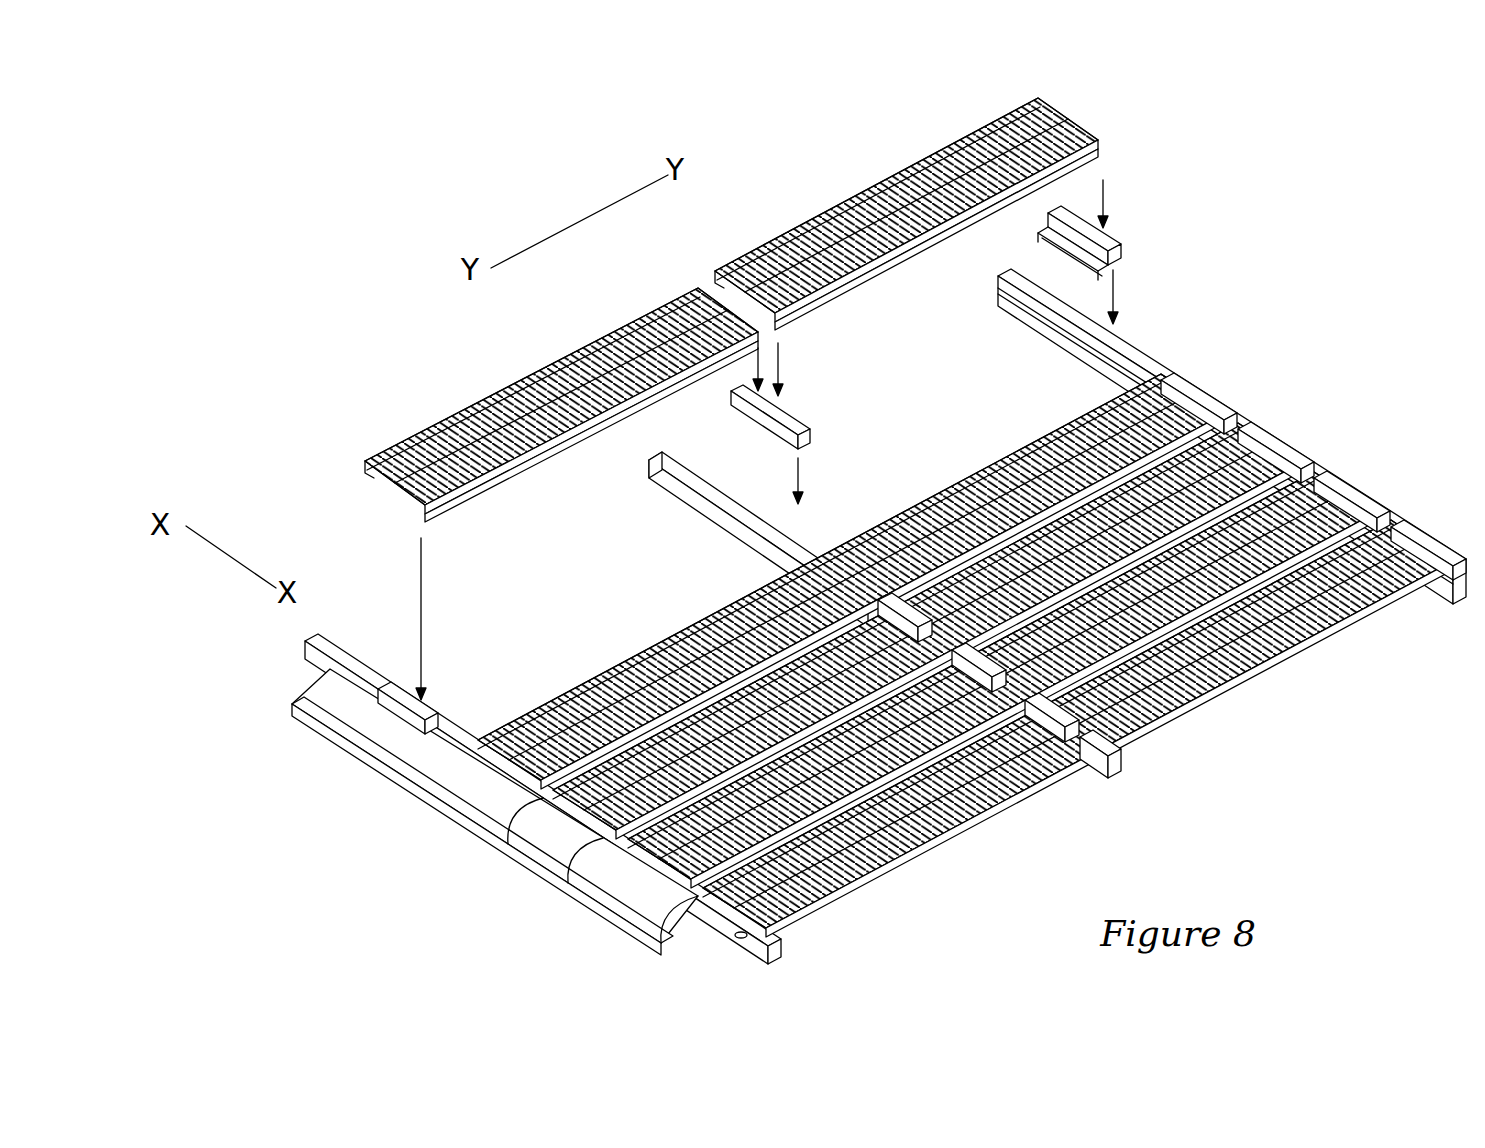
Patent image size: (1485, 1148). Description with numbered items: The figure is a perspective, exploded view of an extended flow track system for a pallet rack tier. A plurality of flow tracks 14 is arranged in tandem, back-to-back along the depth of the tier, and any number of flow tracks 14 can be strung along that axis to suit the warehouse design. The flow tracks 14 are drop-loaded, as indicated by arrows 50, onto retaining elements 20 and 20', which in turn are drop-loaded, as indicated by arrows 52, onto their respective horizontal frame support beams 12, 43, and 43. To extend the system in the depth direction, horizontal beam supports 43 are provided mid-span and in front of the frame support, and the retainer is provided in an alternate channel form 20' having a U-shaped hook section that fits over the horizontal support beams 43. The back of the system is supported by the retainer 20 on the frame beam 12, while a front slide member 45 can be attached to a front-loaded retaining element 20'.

The frame support beam 12 is at (1133, 347).
The flow track 14 is at (780, 214).
The retaining element 20 is at (1252, 393).
The channel 20' is at (765, 681).
The horizontal support beam 43 is at (737, 517).
The front slide member 45 is at (600, 873).
The arrows 50 is at (1095, 178).
The arrows 52 is at (1105, 283).